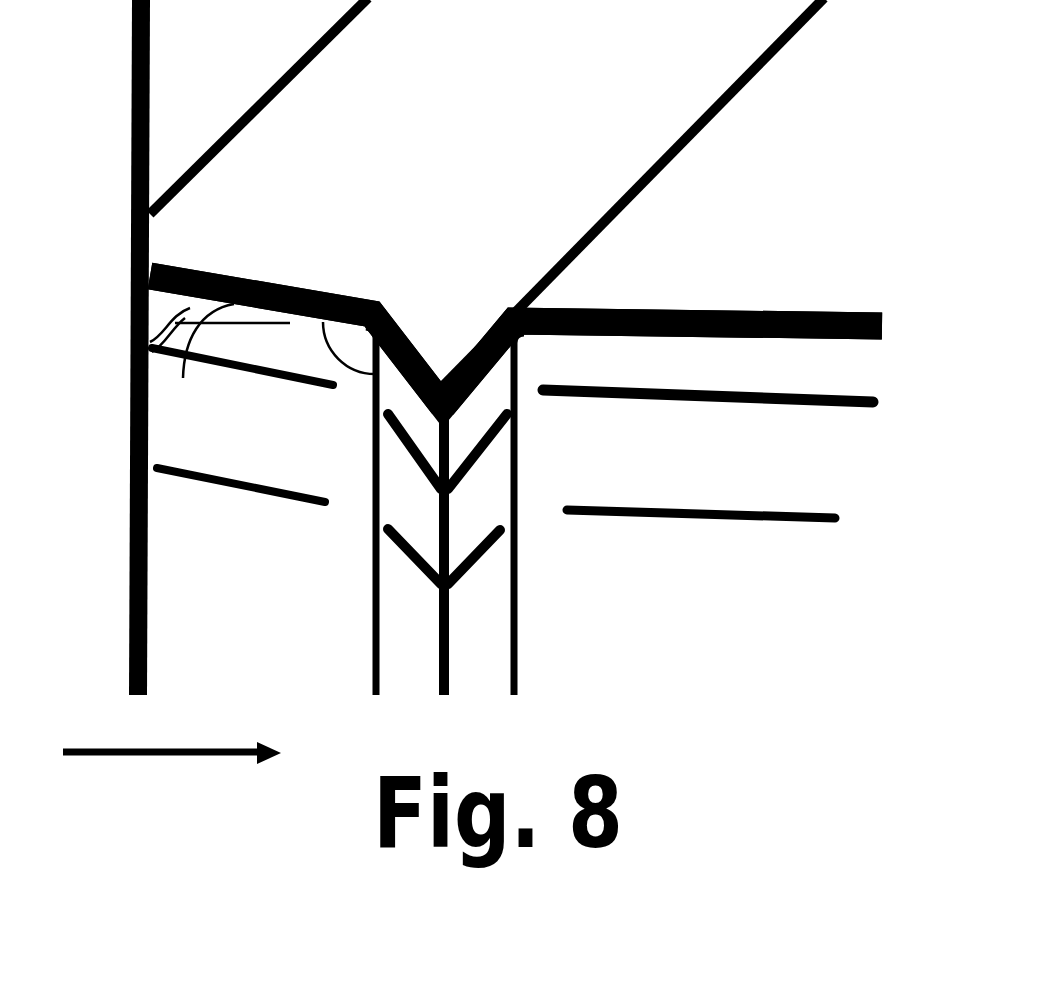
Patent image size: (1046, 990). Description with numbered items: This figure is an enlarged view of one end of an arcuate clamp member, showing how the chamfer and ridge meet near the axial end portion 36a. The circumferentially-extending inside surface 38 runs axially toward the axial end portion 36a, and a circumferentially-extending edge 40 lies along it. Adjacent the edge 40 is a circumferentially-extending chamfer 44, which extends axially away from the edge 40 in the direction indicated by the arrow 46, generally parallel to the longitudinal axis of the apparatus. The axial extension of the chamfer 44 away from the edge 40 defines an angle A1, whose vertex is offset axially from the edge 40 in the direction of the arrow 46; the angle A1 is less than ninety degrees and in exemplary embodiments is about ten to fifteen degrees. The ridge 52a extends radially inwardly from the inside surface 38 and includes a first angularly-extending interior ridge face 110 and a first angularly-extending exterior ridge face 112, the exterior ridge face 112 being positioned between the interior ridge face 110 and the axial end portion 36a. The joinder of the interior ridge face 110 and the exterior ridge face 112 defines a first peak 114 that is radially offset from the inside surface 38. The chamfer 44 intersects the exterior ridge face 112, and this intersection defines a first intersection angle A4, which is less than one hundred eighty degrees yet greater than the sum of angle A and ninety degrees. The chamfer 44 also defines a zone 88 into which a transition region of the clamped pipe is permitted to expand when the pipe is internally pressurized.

The axial end portion 36a is at (132, 151).
The edge 40 is at (132, 276).
The chamfer 44 is at (132, 328).
The zone 88 is at (150, 342).
The angle A1 is at (231, 359).
The first intersection angle A4 is at (335, 360).
The first angularly-extending exterior ridge face 112 is at (428, 396).
The first peak 114 is at (478, 446).
The first angularly-extending interior ridge face 110 is at (453, 438).
The circumferentially-extending inside surface 38 is at (763, 337).
The ridge 52a is at (439, 627).
The arrow 46 is at (198, 758).